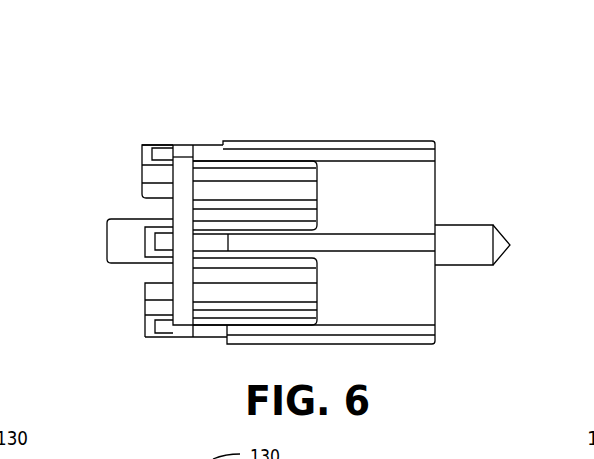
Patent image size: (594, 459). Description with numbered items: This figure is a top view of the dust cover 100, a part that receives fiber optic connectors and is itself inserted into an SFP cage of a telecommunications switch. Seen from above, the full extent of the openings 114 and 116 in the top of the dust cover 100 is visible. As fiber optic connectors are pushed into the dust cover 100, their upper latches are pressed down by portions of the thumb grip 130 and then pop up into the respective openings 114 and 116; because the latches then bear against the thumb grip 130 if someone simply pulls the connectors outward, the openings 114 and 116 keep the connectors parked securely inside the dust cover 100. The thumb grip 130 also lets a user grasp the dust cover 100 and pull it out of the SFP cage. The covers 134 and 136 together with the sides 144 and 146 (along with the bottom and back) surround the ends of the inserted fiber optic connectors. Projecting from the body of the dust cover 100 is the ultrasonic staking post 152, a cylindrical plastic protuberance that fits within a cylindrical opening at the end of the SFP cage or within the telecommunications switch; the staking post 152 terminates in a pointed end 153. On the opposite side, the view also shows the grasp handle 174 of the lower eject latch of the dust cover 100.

The dust cover 100 is at (350, 140).
The opening 114 is at (244, 183).
The opening 116 is at (220, 302).
The thumb grip 130 is at (183, 155).
The cover 134 is at (404, 192).
The cover 136 is at (415, 293).
The side 144 is at (296, 139).
The side 146 is at (376, 345).
The ultrasonic staking post 152 is at (467, 221).
The pointed end 153 is at (505, 254).
The grasp handle 174 is at (105, 253).